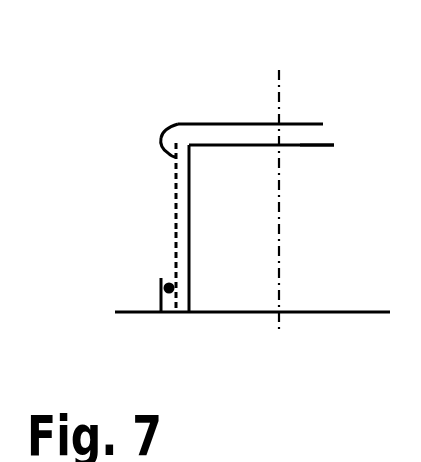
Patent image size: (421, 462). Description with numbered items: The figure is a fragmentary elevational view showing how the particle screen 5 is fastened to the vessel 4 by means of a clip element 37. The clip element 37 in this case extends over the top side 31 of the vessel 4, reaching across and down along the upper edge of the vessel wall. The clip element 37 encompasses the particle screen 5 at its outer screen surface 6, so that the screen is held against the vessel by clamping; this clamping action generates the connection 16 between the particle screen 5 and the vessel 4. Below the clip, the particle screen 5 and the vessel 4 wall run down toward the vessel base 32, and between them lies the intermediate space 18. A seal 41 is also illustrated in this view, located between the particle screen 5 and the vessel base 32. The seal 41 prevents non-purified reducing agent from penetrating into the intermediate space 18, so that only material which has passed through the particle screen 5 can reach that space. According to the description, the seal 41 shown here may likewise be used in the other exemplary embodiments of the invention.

The vessel 4 is at (263, 147).
The particle screen 5 is at (175, 220).
The outer screen surface 6 is at (175, 263).
The connection 16 is at (172, 159).
The intermediate space 18 is at (178, 265).
The top side 31 is at (325, 143).
The vessel base 32 is at (328, 313).
The clip element 37 is at (202, 121).
The seal 41 is at (171, 294).